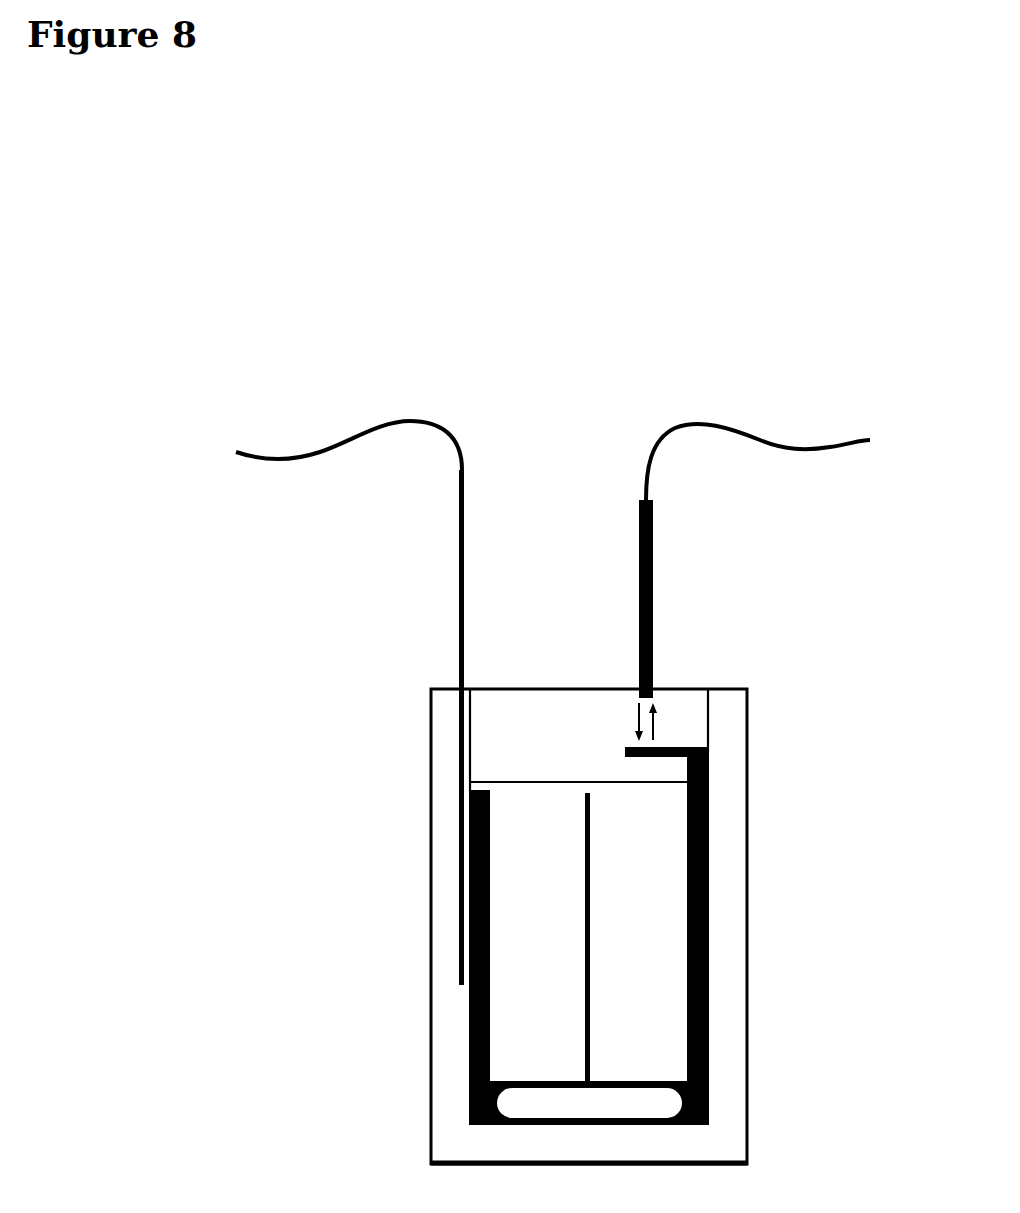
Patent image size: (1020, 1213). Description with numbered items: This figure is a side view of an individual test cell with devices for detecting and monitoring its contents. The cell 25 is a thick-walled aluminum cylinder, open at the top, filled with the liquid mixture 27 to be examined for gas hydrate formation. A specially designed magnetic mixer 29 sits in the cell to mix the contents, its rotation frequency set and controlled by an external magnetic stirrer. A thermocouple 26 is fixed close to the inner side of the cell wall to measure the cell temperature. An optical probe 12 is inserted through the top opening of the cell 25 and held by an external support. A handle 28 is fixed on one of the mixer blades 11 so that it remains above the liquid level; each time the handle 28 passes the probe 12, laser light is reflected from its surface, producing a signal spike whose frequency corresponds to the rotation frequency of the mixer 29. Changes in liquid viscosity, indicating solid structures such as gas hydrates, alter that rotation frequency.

The mixer blade 11 is at (710, 858).
The optical probe 12 is at (653, 535).
The cell 25 is at (452, 707).
The thermocouple 26 is at (458, 545).
The liquid mixture 27 is at (552, 847).
The handle 28 is at (672, 745).
The magnetic mixer 29 is at (533, 1103).